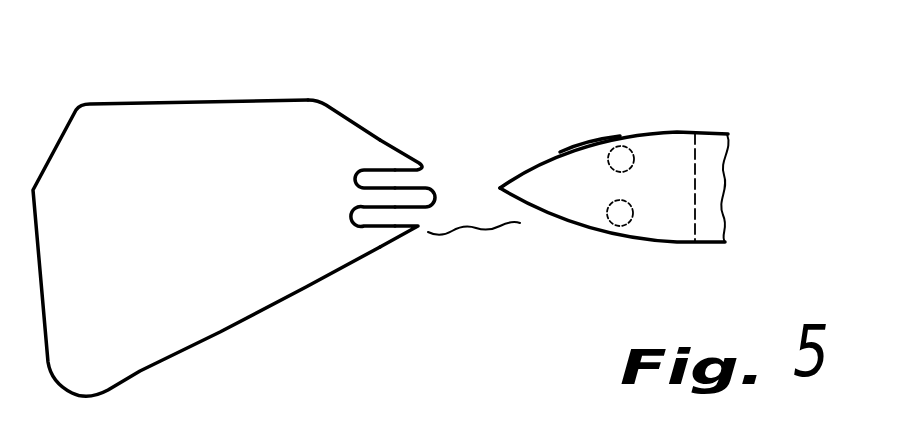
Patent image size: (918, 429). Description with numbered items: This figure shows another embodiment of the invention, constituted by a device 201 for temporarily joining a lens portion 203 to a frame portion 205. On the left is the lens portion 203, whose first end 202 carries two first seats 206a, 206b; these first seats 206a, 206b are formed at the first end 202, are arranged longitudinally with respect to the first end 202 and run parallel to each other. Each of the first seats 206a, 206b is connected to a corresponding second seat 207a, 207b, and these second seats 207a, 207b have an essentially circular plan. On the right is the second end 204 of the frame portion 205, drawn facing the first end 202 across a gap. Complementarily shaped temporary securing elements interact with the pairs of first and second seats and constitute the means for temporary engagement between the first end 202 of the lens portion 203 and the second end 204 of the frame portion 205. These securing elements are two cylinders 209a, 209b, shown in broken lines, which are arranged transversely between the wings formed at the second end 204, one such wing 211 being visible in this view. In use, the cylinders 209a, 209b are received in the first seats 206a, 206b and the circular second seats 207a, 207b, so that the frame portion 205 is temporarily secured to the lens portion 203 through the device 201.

The device 201 is at (286, 198).
The first end 202 is at (362, 121).
The lens portion 203 is at (134, 132).
The second end 204 is at (665, 199).
The frame portion 205 is at (712, 203).
The first seat 206a is at (402, 163).
The first seat 206b is at (398, 220).
The second seat 207a is at (356, 174).
The second seat 207b is at (356, 210).
The cylinder 209a is at (627, 150).
The cylinder 209b is at (617, 225).
The wing 211 is at (580, 163).